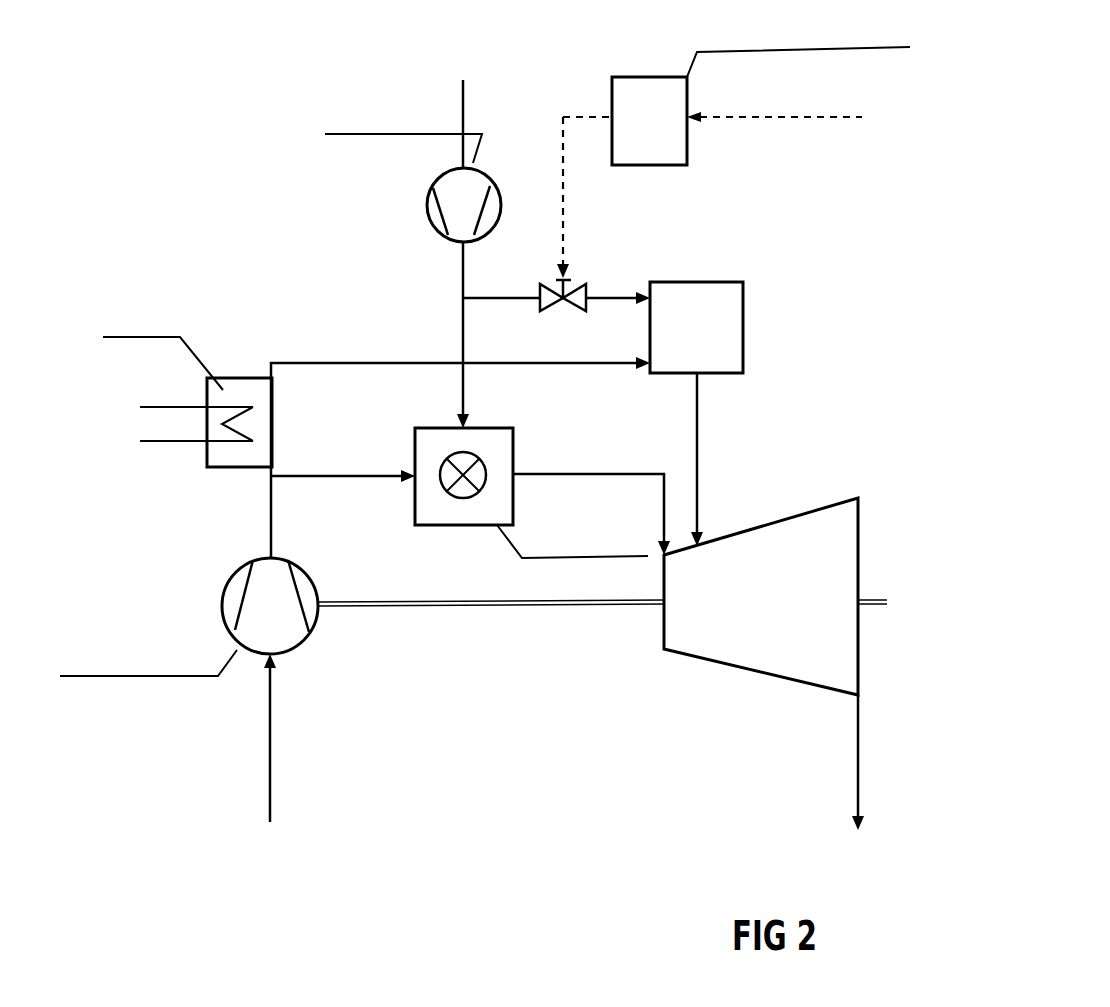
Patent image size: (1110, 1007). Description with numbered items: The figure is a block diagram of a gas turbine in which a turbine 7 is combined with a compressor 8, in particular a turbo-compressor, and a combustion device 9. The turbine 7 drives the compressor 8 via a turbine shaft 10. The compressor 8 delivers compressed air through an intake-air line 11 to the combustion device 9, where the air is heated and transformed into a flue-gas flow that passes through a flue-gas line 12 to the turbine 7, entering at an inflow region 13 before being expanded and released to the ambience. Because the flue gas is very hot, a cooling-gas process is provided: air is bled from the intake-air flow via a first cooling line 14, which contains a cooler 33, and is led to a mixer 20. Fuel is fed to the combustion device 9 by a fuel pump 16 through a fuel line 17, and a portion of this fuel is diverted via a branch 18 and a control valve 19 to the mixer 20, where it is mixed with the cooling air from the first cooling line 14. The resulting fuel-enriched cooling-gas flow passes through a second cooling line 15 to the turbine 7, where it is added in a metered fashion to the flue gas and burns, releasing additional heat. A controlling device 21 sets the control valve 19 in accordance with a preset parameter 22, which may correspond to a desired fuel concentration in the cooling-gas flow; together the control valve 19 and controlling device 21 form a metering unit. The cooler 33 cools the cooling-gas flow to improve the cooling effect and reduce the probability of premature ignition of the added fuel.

The turbine 7 is at (782, 515).
The compressor 8 is at (222, 615).
The combustion device 9 is at (450, 526).
The turbine shaft 10 is at (426, 600).
The intake-air line 11 is at (342, 475).
The flue-gas line 12 is at (572, 472).
The inflow region 13 is at (702, 699).
The first cooling line 14 is at (358, 362).
The second cooling line 15 is at (701, 474).
The fuel pump 16 is at (430, 196).
The fuel line 17 is at (461, 340).
The branch 18 is at (518, 296).
The control valve 19 is at (550, 308).
The mixer 20 is at (744, 312).
The controlling device 21 is at (647, 76).
The preset parameter 22 is at (808, 115).
The cooler 33 is at (237, 377).